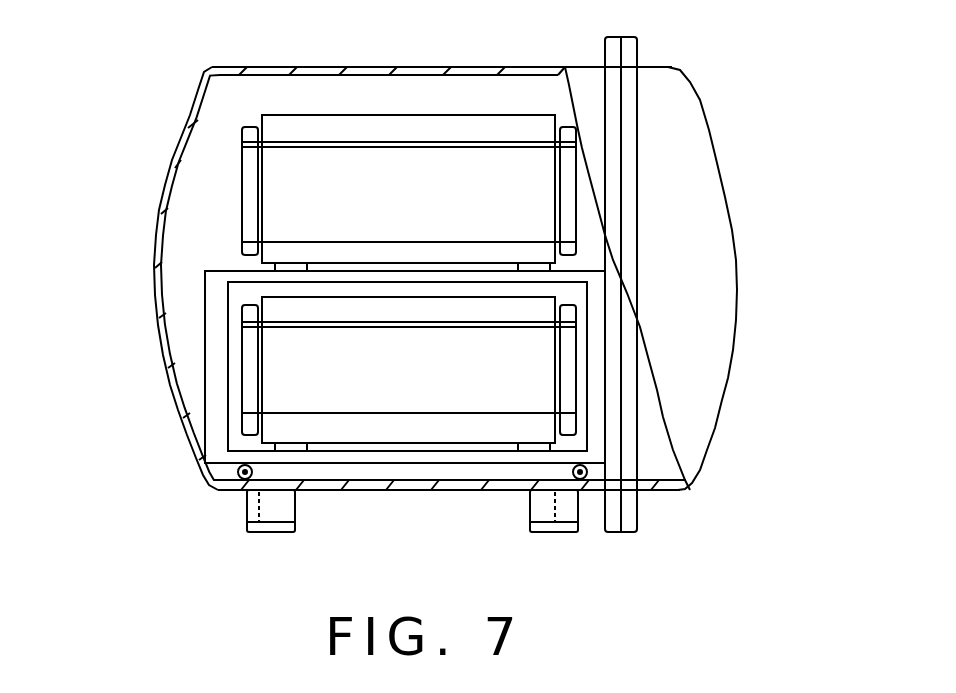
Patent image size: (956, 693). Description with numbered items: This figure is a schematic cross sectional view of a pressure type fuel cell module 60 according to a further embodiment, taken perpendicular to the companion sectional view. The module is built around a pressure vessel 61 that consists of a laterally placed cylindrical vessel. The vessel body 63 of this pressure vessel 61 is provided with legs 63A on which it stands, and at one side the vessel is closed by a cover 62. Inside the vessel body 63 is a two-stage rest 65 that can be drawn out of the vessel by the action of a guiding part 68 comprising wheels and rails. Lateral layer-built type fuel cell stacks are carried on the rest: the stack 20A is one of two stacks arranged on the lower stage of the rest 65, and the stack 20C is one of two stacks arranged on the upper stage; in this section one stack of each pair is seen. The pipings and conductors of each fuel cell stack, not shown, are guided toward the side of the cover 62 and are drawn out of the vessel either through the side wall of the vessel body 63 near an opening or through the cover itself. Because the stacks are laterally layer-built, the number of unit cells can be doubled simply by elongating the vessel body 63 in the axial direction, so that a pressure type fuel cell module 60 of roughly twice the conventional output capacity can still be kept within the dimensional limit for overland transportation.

The pressure type fuel cell module 60 is at (733, 218).
The pressure vessel 61 is at (767, 48).
The cover 62 is at (683, 123).
The vessel body 63 is at (562, 95).
The legs 63A is at (275, 512).
The two-stage rest 65 is at (217, 397).
The guiding part 68 is at (238, 473).
The lateral layer-built type fuel cell stack 20A is at (277, 338).
The lateral layer-built type fuel cell stack 20C is at (275, 183).